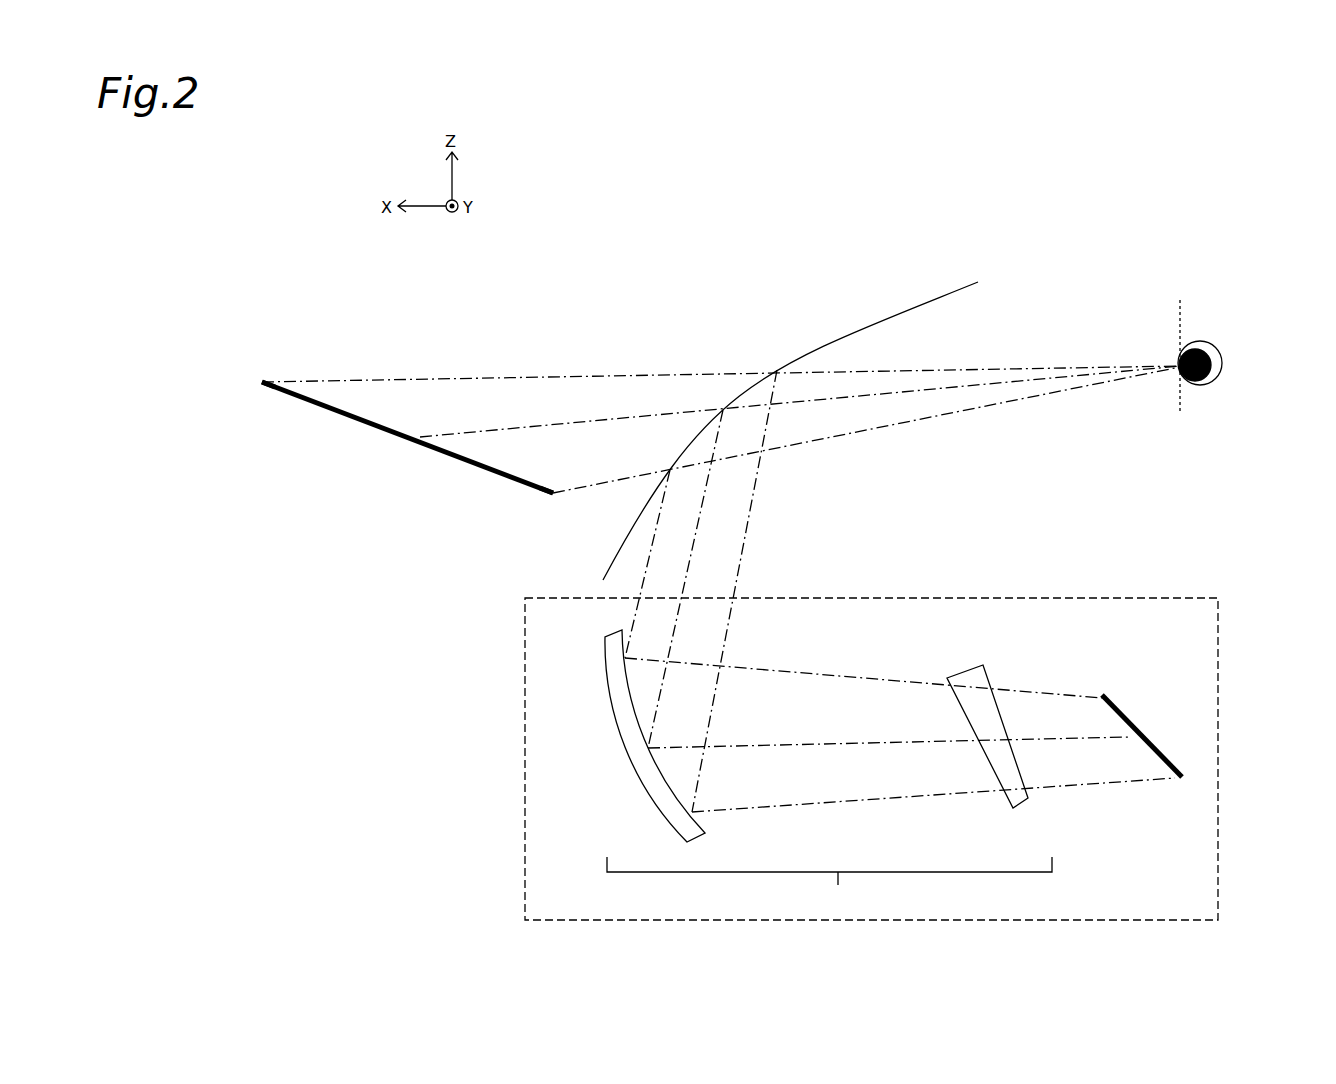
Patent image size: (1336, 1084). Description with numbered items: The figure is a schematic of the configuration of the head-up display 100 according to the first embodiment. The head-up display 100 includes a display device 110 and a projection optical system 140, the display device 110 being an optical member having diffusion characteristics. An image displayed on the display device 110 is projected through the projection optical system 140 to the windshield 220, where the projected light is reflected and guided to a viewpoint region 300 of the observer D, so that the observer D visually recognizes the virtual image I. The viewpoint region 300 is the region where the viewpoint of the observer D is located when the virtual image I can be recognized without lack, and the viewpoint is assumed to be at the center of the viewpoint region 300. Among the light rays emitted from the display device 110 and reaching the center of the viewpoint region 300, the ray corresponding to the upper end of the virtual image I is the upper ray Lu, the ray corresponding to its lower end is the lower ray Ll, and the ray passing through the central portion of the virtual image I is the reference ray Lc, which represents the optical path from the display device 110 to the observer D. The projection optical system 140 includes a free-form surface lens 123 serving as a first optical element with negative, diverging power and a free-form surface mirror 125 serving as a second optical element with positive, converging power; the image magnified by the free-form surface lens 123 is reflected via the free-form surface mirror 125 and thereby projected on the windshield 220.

The head-up display 100 is at (1218, 618).
The display device 110 is at (1128, 712).
The free-form surface lens 123 is at (987, 673).
The free-form surface mirror 125 is at (615, 707).
The projection optical system 140 is at (829, 887).
The windshield 220 is at (902, 308).
The viewpoint region 300 is at (1182, 328).
The observer D is at (1227, 363).
The virtual image I is at (383, 432).
The upper ray Lu is at (640, 375).
The reference ray Lc is at (927, 392).
The lower ray Ll is at (862, 433).